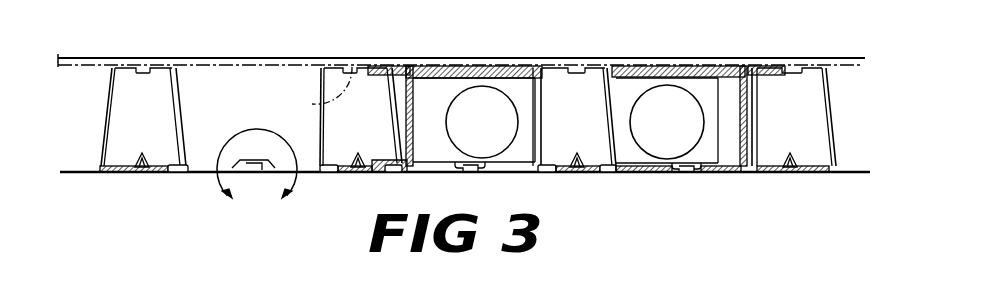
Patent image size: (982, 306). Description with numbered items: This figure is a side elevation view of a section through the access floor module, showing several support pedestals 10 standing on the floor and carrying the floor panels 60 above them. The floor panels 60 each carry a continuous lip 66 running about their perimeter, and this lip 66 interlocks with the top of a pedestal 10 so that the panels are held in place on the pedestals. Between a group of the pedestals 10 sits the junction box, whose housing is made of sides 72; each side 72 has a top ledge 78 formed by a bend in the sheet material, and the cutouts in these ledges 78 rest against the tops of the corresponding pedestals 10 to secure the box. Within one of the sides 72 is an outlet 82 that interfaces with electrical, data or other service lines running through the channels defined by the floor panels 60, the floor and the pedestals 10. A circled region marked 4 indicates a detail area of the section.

The detail view circle of FIG. 4 is at (257, 176).
The support pedestal 10 is at (590, 80).
The floor panel 60 is at (270, 58).
The continuous lip 66 is at (326, 108).
The side 72 is at (737, 103).
The top ledge 78 is at (749, 72).
The outlet 82 is at (650, 137).